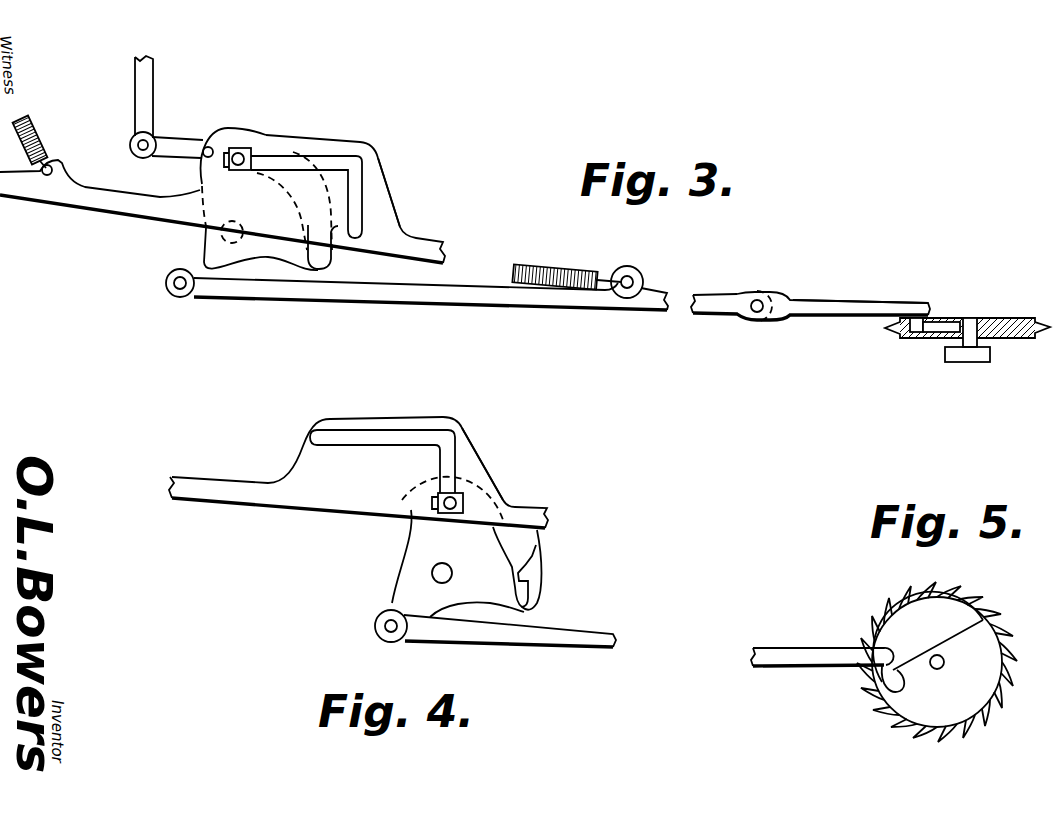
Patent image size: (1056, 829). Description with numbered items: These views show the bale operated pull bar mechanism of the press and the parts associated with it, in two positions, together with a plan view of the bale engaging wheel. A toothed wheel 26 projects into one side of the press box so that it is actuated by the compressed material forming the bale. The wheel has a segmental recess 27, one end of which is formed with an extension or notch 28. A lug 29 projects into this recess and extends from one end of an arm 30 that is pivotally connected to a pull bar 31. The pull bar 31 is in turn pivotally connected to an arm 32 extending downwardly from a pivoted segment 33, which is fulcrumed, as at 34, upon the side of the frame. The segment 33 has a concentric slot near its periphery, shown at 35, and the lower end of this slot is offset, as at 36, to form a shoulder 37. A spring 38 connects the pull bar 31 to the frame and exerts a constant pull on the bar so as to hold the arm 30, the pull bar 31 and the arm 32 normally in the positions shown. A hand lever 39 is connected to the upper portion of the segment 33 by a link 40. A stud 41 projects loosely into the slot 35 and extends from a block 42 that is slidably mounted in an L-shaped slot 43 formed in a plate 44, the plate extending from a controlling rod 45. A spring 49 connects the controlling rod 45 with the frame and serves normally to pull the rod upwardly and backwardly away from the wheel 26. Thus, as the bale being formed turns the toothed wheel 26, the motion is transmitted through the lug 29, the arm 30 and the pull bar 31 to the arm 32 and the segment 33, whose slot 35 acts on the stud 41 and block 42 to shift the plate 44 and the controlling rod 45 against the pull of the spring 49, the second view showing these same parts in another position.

In FIG. 3, the toothed wheel 26 is at (1020, 340).
In FIG. 5, the toothed wheel 26 is at (990, 655).
In FIG. 3, the segmental recess 27 is at (943, 327).
In FIG. 5, the segmental recess 27 is at (953, 610).
In FIG. 5, the extension or notch 28 is at (882, 687).
In FIG. 3, the lug 29 is at (930, 318).
In FIG. 3, the arm 30 is at (860, 305).
In FIG. 5, the arm 30 is at (790, 655).
In FIG. 3, the pull bar 31 is at (457, 297).
In FIG. 4, the pull bar 31 is at (560, 637).
In FIG. 3, the arm 32 is at (190, 256).
In FIG. 4, the arm 32 is at (403, 593).
In FIG. 3, the pivoted segment 33 is at (294, 231).
In FIG. 4, the pivoted segment 33 is at (474, 547).
In FIG. 3, the fulcrum 34 is at (233, 243).
In FIG. 4, the fulcrum 34 is at (431, 571).
In FIG. 4, the concentric slot 35 is at (515, 553).
In FIG. 3, the offset 36 is at (331, 261).
In FIG. 4, the offset 36 is at (533, 587).
In FIG. 3, the shoulder 37 is at (330, 223).
In FIG. 4, the shoulder 37 is at (528, 568).
In FIG. 3, the spring 38 is at (583, 268).
In FIG. 3, the hand lever 39 is at (152, 98).
In FIG. 3, the link 40 is at (177, 147).
In FIG. 3, the stud 41 is at (232, 150).
In FIG. 4, the stud 41 is at (463, 503).
In FIG. 3, the block 42 is at (250, 157).
In FIG. 4, the block 42 is at (468, 505).
In FIG. 3, the L-shaped slot 43 is at (323, 155).
In FIG. 4, the L-shaped slot 43 is at (418, 430).
In FIG. 3, the plate 44 is at (373, 153).
In FIG. 4, the plate 44 is at (468, 463).
In FIG. 3, the controlling rod 45 is at (72, 200).
In FIG. 4, the controlling rod 45 is at (232, 495).
In FIG. 3, the spring 49 is at (38, 128).